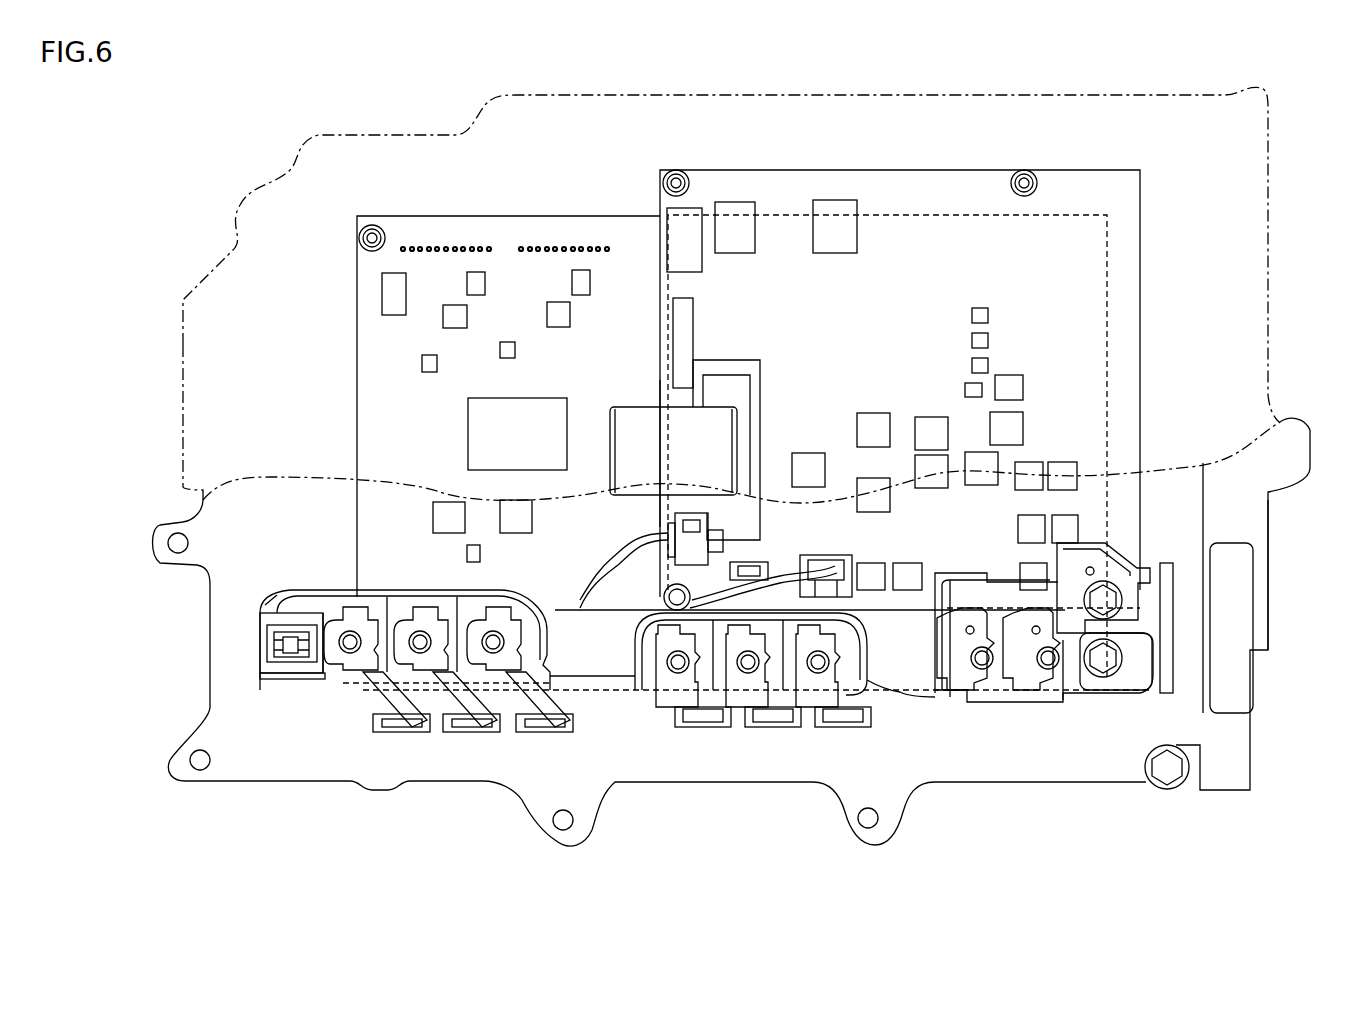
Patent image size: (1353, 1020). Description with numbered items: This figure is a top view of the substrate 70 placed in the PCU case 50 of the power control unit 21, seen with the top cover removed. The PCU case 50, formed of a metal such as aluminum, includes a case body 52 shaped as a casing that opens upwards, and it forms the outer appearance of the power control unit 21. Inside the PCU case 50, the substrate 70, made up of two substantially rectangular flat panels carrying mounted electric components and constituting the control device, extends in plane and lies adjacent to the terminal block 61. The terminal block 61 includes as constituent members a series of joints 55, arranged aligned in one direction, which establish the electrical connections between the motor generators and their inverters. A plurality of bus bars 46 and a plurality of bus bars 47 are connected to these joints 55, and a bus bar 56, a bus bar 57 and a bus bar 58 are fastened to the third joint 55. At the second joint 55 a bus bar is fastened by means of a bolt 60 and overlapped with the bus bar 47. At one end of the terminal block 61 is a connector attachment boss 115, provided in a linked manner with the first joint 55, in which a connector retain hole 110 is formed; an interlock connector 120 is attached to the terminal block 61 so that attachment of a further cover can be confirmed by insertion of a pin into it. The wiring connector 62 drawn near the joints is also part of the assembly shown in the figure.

The power control unit 21 is at (172, 129).
The substrate 70 is at (385, 410).
The connector / wiring harness 62 is at (383, 595).
The terminal block 61 is at (273, 586).
The joint 55 is at (332, 610).
The connector attachment boss 115 is at (287, 610).
The connector retain hole 110 is at (277, 648).
The interlock connector 120 is at (283, 665).
The bus bar 46 is at (393, 710).
The bus bar 47 is at (707, 713).
The bus bar 56 is at (973, 680).
The bus bar 57 is at (1073, 680).
The PCU case 50 is at (998, 795).
The case body 52 is at (1270, 556).
The bus bar 58 is at (1130, 592).
The bolt 60 is at (1113, 602).